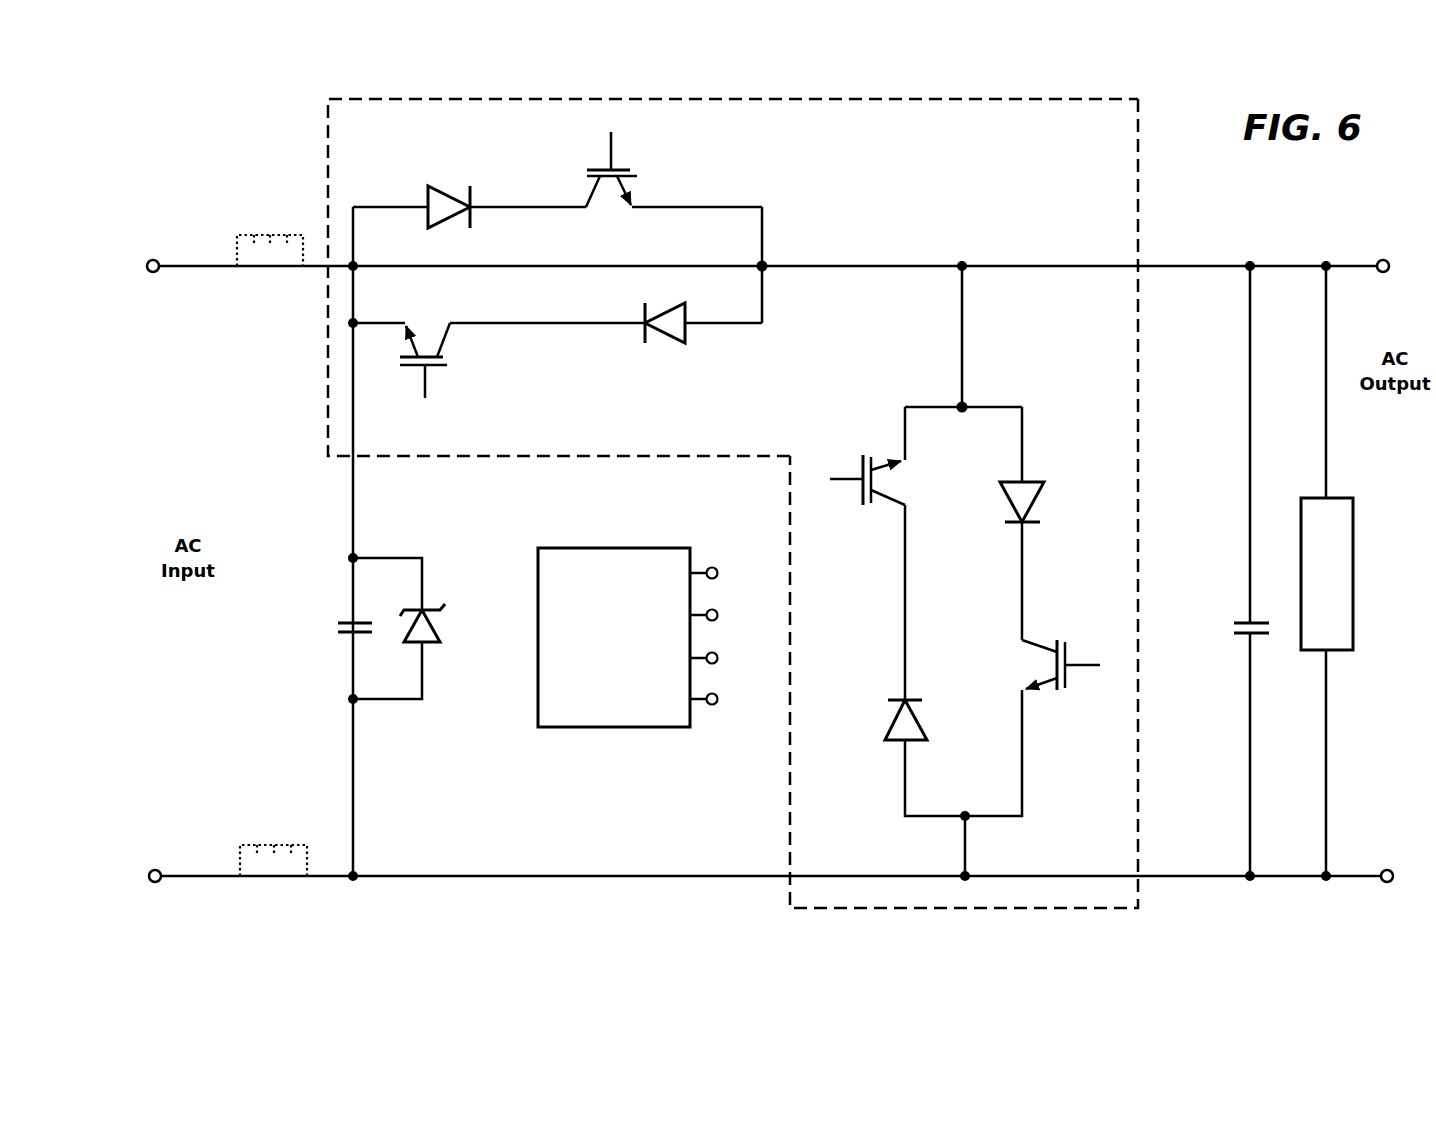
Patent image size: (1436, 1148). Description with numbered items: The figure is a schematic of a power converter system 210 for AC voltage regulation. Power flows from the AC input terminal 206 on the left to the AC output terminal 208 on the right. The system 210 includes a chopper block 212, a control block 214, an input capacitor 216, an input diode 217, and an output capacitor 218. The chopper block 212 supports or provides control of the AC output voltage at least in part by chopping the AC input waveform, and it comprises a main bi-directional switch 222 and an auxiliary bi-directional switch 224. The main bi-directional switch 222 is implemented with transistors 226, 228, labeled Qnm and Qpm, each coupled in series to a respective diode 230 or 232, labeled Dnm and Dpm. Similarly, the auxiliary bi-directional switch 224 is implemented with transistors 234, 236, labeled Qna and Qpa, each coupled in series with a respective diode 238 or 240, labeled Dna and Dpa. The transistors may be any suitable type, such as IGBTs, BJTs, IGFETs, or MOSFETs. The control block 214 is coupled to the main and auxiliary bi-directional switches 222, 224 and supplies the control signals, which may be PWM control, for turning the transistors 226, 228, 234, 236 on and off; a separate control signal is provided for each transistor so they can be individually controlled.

The AC input terminal 206 is at (211, 276).
The AC output terminal 208 is at (1340, 262).
The power converter system 210 is at (231, 181).
The chopper block 212 is at (1143, 223).
The control block 214 is at (640, 731).
The input capacitor 216 is at (345, 636).
The input diode 217 is at (428, 646).
The output capacitor 218 is at (1238, 636).
The main bi-directional switch 222 is at (764, 236).
The auxiliary bi-directional switch 224 is at (1008, 405).
The transistor 226 is at (452, 366).
The transistor 228 is at (598, 169).
The diode 230 is at (688, 336).
The diode 232 is at (428, 198).
The transistor 234 is at (1070, 645).
The transistor 236 is at (862, 455).
The diode 238 is at (1032, 482).
The diode 240 is at (898, 746).